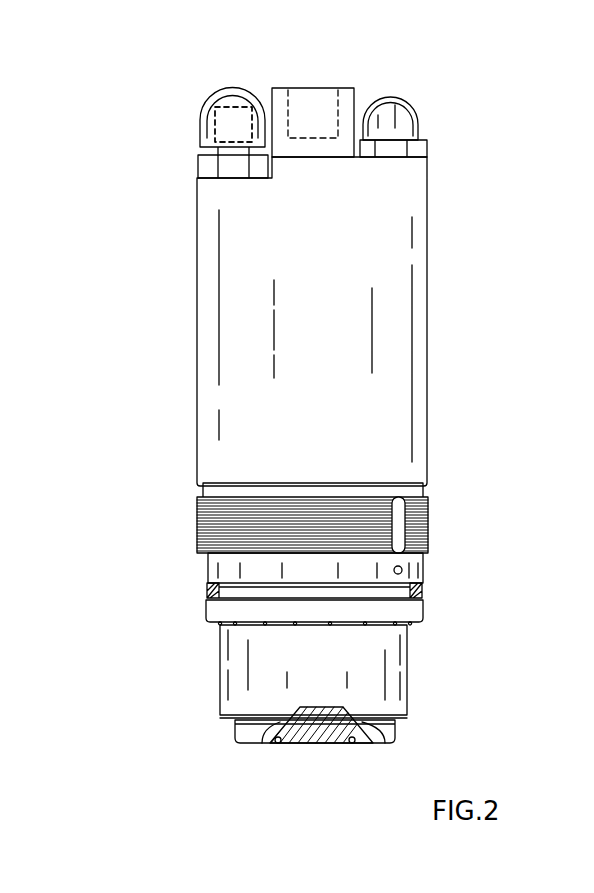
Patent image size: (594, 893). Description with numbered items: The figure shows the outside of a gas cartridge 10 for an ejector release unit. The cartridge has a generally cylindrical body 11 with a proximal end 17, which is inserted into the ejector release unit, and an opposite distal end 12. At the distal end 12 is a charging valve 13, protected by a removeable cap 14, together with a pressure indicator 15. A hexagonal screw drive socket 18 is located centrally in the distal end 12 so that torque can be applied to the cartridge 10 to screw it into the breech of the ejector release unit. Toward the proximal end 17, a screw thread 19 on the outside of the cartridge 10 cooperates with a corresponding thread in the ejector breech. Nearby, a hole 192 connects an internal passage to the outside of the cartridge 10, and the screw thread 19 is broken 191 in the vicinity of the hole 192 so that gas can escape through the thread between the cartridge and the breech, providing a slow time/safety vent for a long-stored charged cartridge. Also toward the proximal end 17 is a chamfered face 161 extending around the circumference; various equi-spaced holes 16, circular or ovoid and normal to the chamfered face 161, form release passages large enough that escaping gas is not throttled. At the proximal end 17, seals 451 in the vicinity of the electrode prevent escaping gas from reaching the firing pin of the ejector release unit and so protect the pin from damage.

The cartridge 10 is at (458, 306).
The generally cylindrical body 11 is at (213, 370).
The distal end 12 is at (458, 142).
The charging valve 13 is at (237, 112).
The removeable cap 14 is at (200, 105).
The pressure indicator 15 is at (400, 97).
The holes 16 is at (267, 627).
The proximal end 17 is at (447, 691).
The hexagonal screw drive socket 18 is at (323, 108).
The screw thread 19 is at (222, 522).
The break in screw thread 191 is at (423, 500).
The hole 192 is at (410, 572).
The chamfered face 161 is at (222, 627).
The seals 451 is at (352, 743).